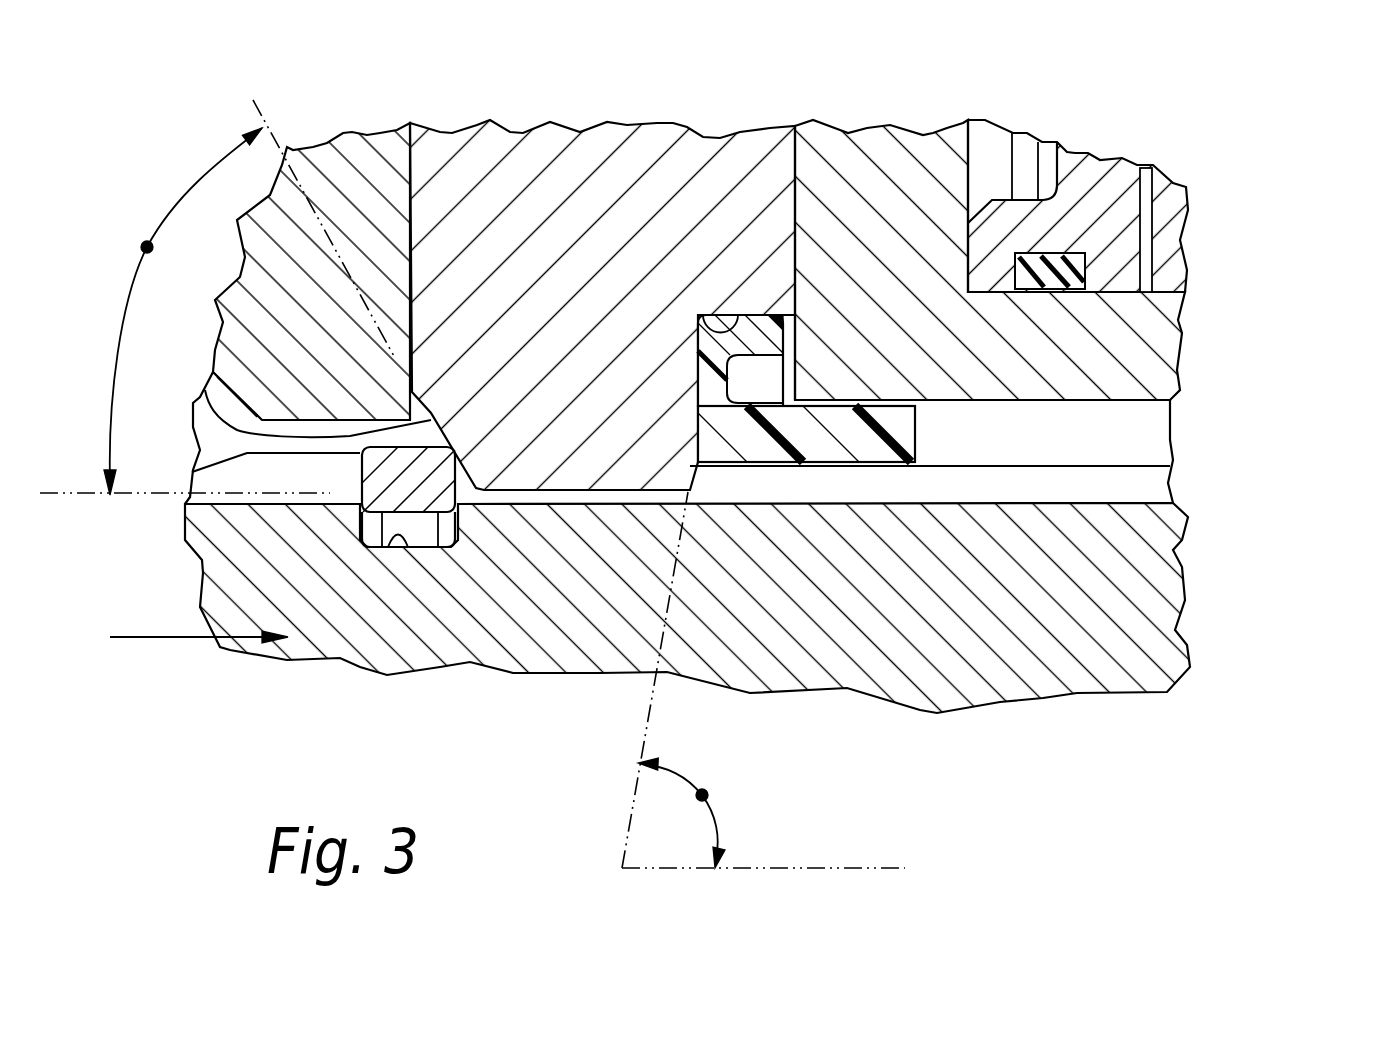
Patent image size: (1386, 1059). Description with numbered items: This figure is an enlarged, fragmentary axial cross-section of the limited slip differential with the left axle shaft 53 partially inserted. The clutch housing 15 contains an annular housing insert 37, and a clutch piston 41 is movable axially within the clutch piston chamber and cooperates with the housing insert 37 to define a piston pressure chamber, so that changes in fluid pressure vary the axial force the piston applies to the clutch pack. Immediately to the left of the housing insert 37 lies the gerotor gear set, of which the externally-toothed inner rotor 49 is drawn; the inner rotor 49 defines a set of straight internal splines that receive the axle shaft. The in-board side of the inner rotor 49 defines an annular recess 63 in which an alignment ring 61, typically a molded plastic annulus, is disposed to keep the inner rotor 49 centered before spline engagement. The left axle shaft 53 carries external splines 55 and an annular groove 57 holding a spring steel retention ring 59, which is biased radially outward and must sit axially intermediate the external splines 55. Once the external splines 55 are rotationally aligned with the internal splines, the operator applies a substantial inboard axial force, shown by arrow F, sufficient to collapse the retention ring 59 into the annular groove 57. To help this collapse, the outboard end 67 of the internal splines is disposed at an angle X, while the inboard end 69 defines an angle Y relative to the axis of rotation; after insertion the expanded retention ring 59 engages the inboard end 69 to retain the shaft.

The clutch housing 15 is at (350, 143).
The inner rotor 49 is at (525, 150).
The annular recess 63 is at (727, 332).
The housing insert 37 is at (845, 146).
The clutch piston 41 is at (1088, 178).
The alignment ring 61 is at (907, 427).
The left axle shaft 53 is at (1041, 680).
The annular groove 57 is at (393, 533).
The retention ring 59 is at (422, 507).
The outboard end of the internal splines 67 is at (205, 390).
The external splines 55 is at (223, 473).
The inboard end of the internal splines 69 is at (690, 481).
The angle X is at (147, 247).
The angle Y is at (705, 795).
The axial force arrow F is at (160, 637).